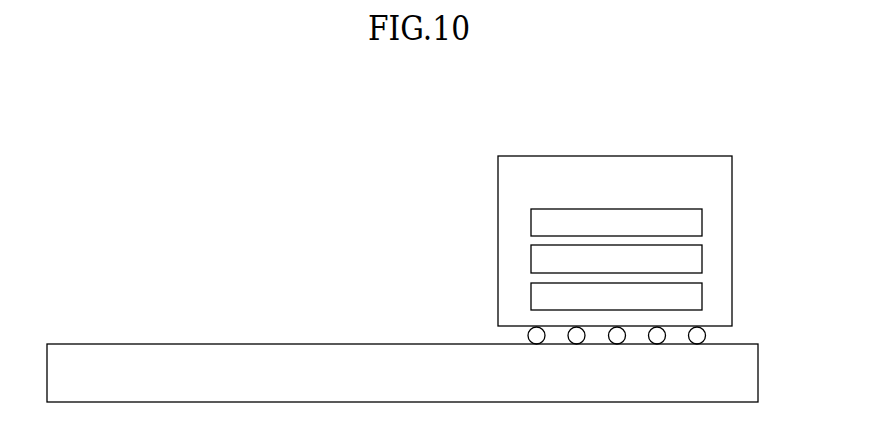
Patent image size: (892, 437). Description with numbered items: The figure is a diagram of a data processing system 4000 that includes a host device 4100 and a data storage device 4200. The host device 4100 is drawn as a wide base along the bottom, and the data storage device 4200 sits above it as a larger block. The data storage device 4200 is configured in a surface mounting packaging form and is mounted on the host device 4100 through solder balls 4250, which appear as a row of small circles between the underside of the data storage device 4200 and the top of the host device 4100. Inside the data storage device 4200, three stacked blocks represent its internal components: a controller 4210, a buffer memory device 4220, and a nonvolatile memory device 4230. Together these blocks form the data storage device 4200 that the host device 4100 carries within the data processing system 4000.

The data processing system 4000 is at (108, 98).
The host device 4100 is at (402, 373).
The data storage device 4200 is at (615, 241).
The controller 4210 is at (616, 221).
The buffer memory device 4220 is at (616, 260).
The nonvolatile memory device 4230 is at (616, 297).
The solder balls 4250 is at (716, 333).